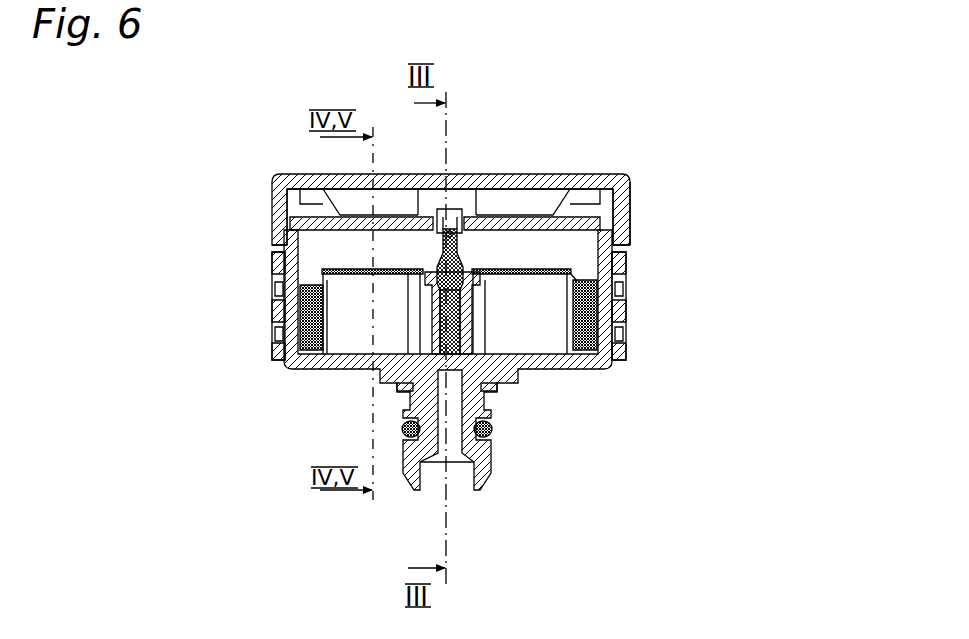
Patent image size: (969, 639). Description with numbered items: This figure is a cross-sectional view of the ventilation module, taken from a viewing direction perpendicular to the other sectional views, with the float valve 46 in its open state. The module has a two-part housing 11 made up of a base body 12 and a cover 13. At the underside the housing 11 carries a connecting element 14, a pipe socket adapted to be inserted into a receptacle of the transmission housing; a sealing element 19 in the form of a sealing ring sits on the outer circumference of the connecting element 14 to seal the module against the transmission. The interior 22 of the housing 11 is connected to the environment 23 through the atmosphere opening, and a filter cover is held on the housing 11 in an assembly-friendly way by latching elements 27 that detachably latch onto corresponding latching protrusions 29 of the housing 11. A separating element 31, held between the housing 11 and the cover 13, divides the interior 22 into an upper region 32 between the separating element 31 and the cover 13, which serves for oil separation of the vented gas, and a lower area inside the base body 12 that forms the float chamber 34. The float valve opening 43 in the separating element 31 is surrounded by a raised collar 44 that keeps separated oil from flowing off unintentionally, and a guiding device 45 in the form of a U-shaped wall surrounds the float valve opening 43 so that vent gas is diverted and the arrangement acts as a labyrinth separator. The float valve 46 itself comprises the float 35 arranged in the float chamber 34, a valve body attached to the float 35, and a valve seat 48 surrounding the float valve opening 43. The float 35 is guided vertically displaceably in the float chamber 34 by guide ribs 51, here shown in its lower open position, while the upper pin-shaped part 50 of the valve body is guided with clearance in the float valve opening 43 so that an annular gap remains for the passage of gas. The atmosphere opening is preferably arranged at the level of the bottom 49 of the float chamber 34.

The housing 11 is at (268, 204).
The base body 12 is at (630, 212).
The cover 13 is at (536, 173).
The connecting element 14 is at (493, 448).
The sealing element 19 is at (495, 430).
The interior 22 is at (538, 250).
The environment 23 is at (188, 285).
The latching elements 27 is at (270, 310).
The latching protrusions 29 is at (277, 335).
The separating element 31 is at (592, 188).
The upper region 32 is at (318, 203).
The float chamber 34 is at (550, 250).
The float 35 is at (537, 277).
The float valve opening 43 is at (455, 209).
The raised collar 44 is at (474, 208).
The guiding device 45 is at (418, 200).
The float valve 46 is at (513, 330).
The valve seat 48 is at (437, 239).
The bottom 49 is at (400, 353).
The pin-shaped part 50 is at (455, 246).
The guide ribs 51 is at (313, 295).